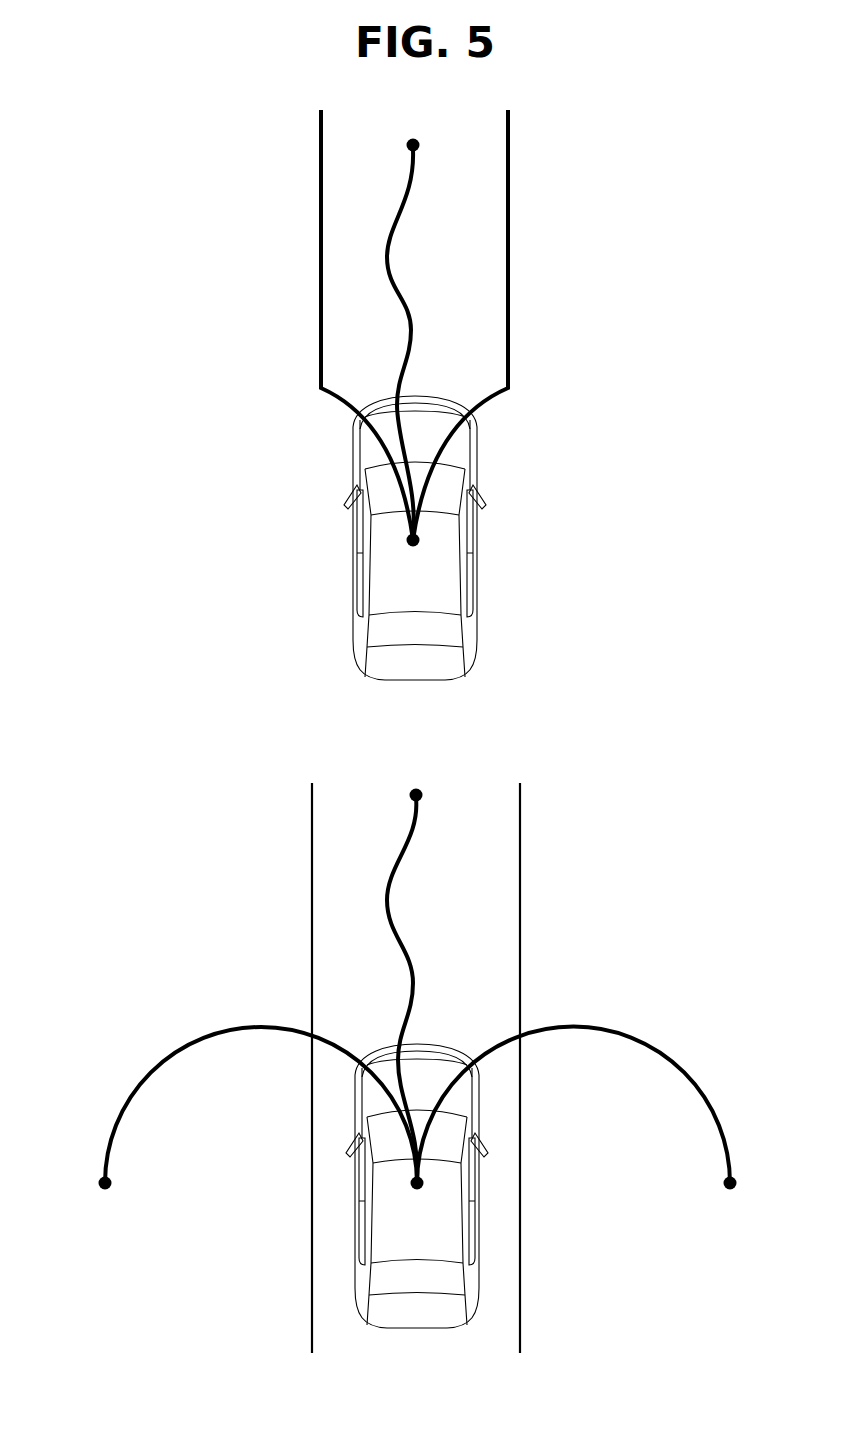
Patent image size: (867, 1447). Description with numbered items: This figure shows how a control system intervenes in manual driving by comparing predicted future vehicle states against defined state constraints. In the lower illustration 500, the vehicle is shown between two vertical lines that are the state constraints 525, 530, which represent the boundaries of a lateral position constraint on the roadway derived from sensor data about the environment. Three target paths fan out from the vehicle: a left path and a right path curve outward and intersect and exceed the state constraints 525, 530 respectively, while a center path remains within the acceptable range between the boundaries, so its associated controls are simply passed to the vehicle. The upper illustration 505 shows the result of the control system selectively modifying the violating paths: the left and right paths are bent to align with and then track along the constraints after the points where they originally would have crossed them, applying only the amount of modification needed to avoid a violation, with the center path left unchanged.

The illustration of predicted future states 500 is at (678, 737).
The illustration of modified target paths 505 is at (593, 91).
The state constraint 525 is at (311, 968).
The state constraint 530 is at (522, 938).